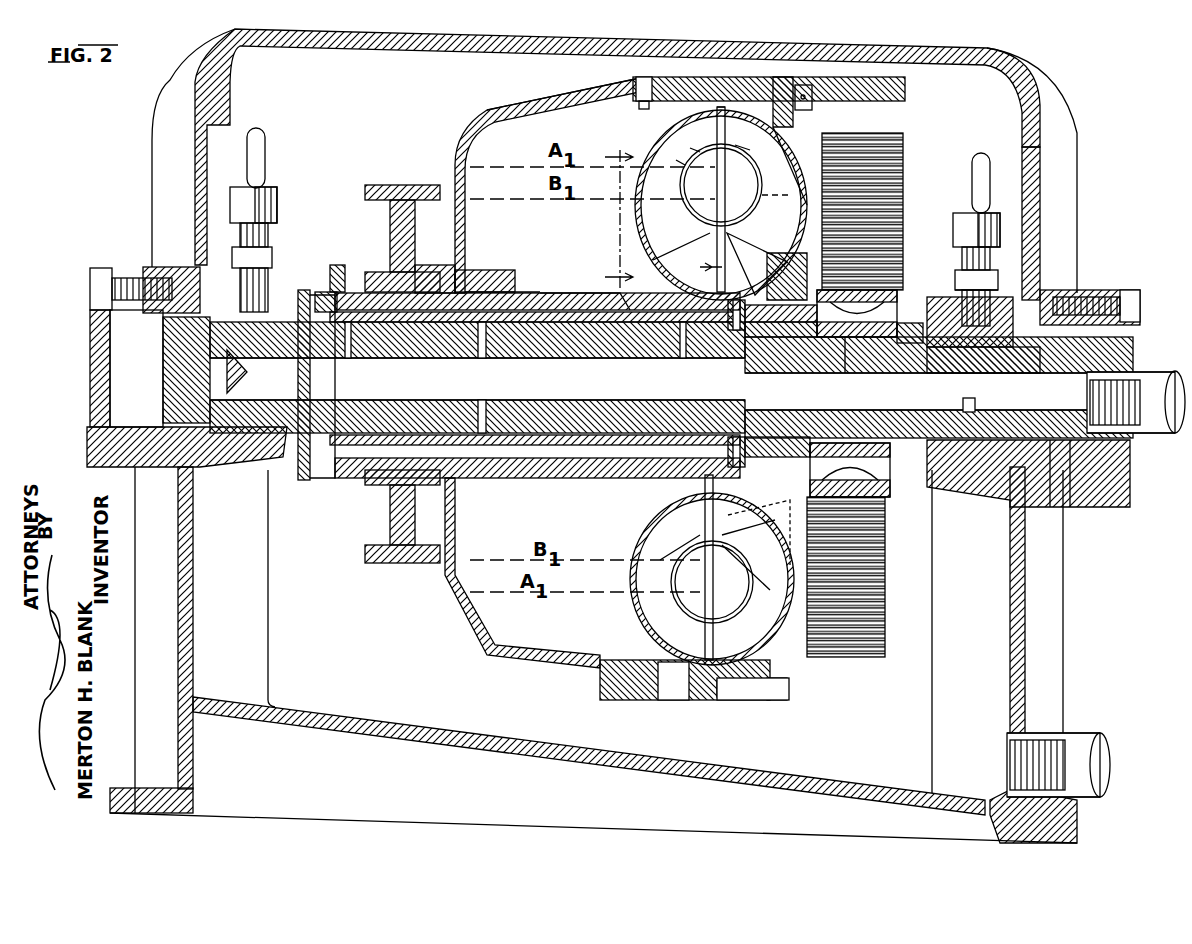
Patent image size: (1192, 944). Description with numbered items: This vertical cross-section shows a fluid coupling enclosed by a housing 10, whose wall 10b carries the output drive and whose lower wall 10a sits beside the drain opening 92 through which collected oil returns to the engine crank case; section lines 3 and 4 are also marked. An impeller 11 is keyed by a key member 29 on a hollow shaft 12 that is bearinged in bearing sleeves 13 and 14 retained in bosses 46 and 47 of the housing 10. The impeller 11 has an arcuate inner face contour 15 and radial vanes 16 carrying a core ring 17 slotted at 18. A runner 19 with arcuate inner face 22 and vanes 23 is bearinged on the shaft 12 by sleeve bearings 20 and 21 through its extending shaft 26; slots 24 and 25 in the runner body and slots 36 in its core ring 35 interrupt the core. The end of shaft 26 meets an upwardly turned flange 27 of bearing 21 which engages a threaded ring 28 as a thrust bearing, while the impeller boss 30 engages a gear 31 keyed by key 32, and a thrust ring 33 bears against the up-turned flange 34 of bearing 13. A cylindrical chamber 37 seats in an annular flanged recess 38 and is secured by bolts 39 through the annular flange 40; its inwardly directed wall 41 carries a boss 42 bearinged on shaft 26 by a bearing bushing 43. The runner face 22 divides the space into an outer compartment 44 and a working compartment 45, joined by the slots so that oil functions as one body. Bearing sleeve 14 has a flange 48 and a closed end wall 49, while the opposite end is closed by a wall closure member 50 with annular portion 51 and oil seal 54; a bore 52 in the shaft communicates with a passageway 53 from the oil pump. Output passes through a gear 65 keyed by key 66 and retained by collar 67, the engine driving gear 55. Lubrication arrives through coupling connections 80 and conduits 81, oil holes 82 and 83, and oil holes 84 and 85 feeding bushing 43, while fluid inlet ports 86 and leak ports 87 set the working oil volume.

The housing 10 is at (1085, 240).
The housing lower right wall 10a is at (1010, 578).
The wall 10b is at (195, 512).
The impeller 11 is at (812, 652).
The shaft 12 is at (790, 355).
The bearing sleeve 13 is at (950, 480).
The bearing sleeve 14 is at (265, 467).
The inner face contour 15 is at (792, 161).
The vanes 16 is at (800, 137).
The core ring 17 is at (758, 160).
The slots 18 is at (745, 627).
The runner 19 is at (662, 122).
The sleeve bearing 20 is at (648, 312).
The sleeve bearing 21 is at (400, 322).
The inner face 22 is at (715, 127).
The vanes 23 is at (700, 233).
The slots 24 is at (635, 515).
The slots 25 is at (628, 230).
The extending shaft 26 is at (532, 316).
The flange 27 is at (320, 292).
The ring 28 is at (308, 480).
The key member 29 is at (772, 345).
The boss 30 is at (800, 322).
The gear 31 is at (890, 292).
The key 32 is at (852, 345).
The thrust ring 33 is at (915, 345).
The up-turned flange 34 is at (935, 310).
The core ring 35 is at (703, 152).
The slots 36 is at (686, 165).
The cylindrical chamber 37 is at (546, 100).
The annular flanged recess 38 is at (740, 115).
The bolts 39 is at (812, 100).
The annular flange 40 is at (805, 84).
The inwardly directed wall 41 is at (455, 168).
The boss 42 is at (508, 272).
The bearing bushing 43 is at (520, 278).
The outer compartment 44 is at (517, 159).
The compartment 45 is at (786, 209).
The boss 46 is at (955, 292).
The boss 47 is at (298, 290).
The flange 48 is at (290, 467).
The closed end wall 49 is at (163, 380).
The wall closure member 50 is at (1130, 470).
The annular portion 51 is at (1050, 478).
The bore 52 is at (1018, 373).
The passageway 53 is at (1150, 375).
The oil seal 54 is at (1070, 475).
The gear 55 is at (905, 160).
The gear 65 is at (400, 185).
The key 66 is at (430, 265).
The collar 67 is at (340, 265).
The coupling connection 80 is at (278, 212).
The conduits 81 is at (262, 132).
The oil holes 82 is at (348, 358).
The oil holes 83 is at (248, 374).
The oil hole 84 is at (480, 400).
The oil hole 85 is at (510, 462).
The fluid inlet ports 86 is at (735, 372).
The leak ports 87 is at (640, 100).
The drain opening 92 is at (1065, 735).
The section line 3 is at (720, 197).
The section line 4 is at (608, 218).